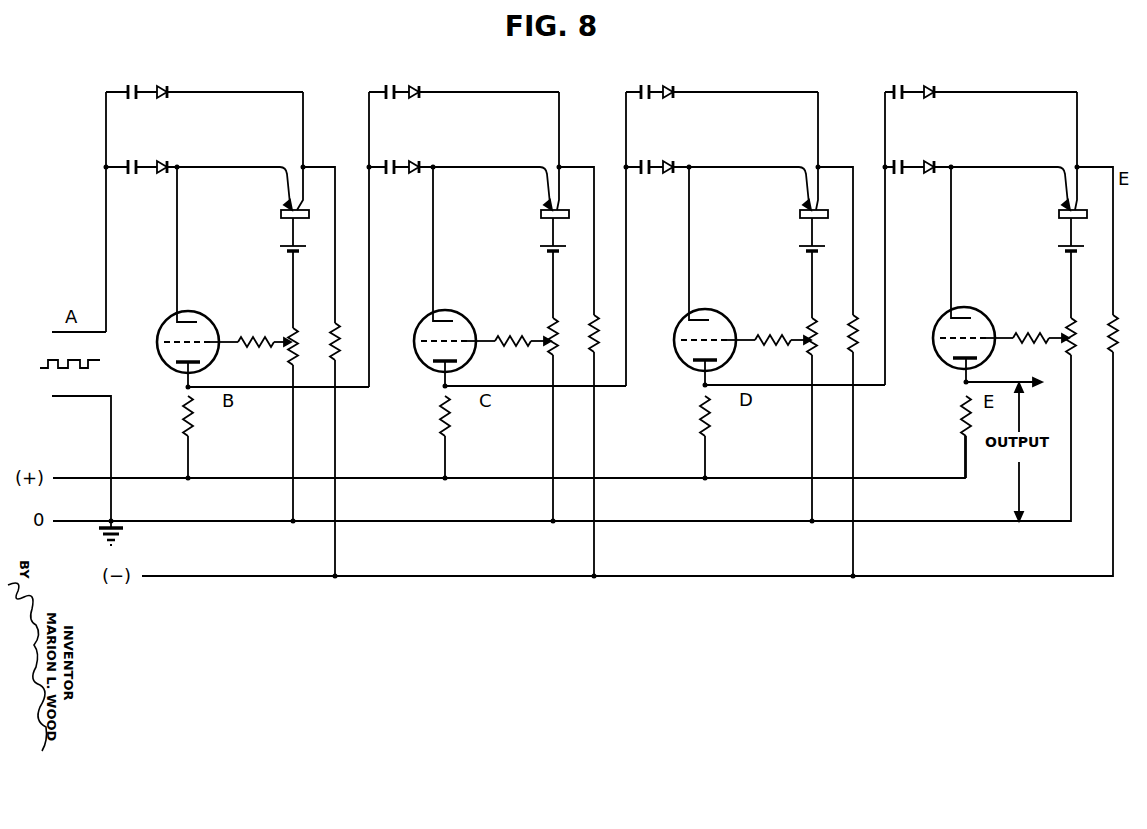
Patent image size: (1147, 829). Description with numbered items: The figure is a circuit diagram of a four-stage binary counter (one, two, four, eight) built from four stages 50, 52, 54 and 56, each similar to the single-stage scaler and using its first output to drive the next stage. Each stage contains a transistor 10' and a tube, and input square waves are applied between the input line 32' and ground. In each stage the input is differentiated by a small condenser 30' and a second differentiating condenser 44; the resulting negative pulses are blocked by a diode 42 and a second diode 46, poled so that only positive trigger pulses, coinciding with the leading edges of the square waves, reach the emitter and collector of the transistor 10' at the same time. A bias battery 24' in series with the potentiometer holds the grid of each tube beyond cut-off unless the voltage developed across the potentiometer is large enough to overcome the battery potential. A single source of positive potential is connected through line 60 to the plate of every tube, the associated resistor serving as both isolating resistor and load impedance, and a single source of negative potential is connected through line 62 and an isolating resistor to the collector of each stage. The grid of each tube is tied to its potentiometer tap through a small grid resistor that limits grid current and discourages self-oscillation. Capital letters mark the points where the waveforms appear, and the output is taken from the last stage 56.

The transistor 10' is at (276, 213).
The bias battery 24' is at (282, 262).
The condenser 30' is at (140, 182).
The input line 32' is at (67, 334).
The diode 42 is at (165, 165).
The differentiating condenser 44 is at (127, 98).
The diode 46 is at (167, 98).
The first stage 50 is at (238, 309).
The second stage 52 is at (495, 308).
The third stage 54 is at (755, 307).
The fourth stage 56 is at (1013, 305).
The line 60 is at (85, 477).
The line 62 is at (163, 576).